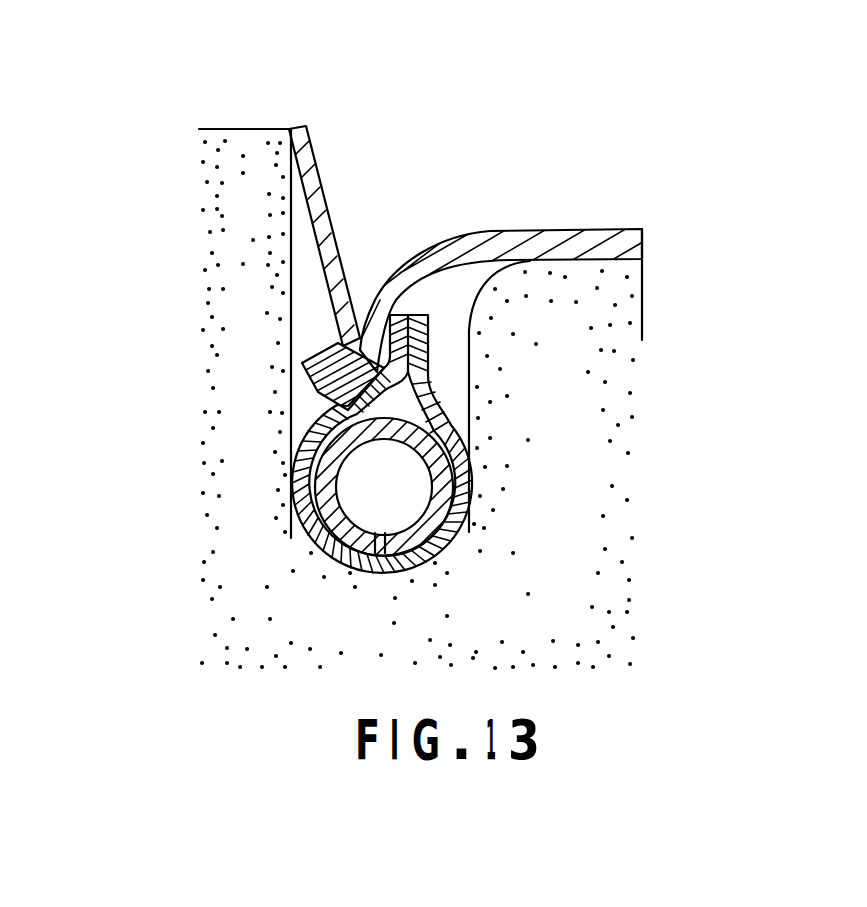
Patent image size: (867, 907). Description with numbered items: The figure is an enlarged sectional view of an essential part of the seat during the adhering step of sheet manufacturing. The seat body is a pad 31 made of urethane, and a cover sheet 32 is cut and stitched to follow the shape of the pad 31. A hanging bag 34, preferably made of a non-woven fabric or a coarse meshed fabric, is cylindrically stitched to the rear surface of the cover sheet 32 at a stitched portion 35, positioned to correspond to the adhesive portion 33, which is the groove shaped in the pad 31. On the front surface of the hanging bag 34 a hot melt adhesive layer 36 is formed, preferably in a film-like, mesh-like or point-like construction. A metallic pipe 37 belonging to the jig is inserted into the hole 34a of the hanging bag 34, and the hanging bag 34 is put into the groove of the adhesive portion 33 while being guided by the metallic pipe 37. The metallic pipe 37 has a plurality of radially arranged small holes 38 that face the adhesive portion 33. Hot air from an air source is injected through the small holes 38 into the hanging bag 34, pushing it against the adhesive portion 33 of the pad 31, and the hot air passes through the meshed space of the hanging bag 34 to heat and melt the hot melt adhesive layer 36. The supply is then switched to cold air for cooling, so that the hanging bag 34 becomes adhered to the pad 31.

The pad 31 is at (253, 158).
The cover sheet 32 is at (557, 235).
The adhesive portion 33 is at (291, 426).
The hanging bag 34 is at (450, 539).
The hole 34a is at (318, 392).
The stitched portion 35 is at (428, 370).
The hot melt adhesive layer 36 is at (447, 547).
The metallic pipe 37 is at (310, 534).
The small holes 38 is at (383, 560).